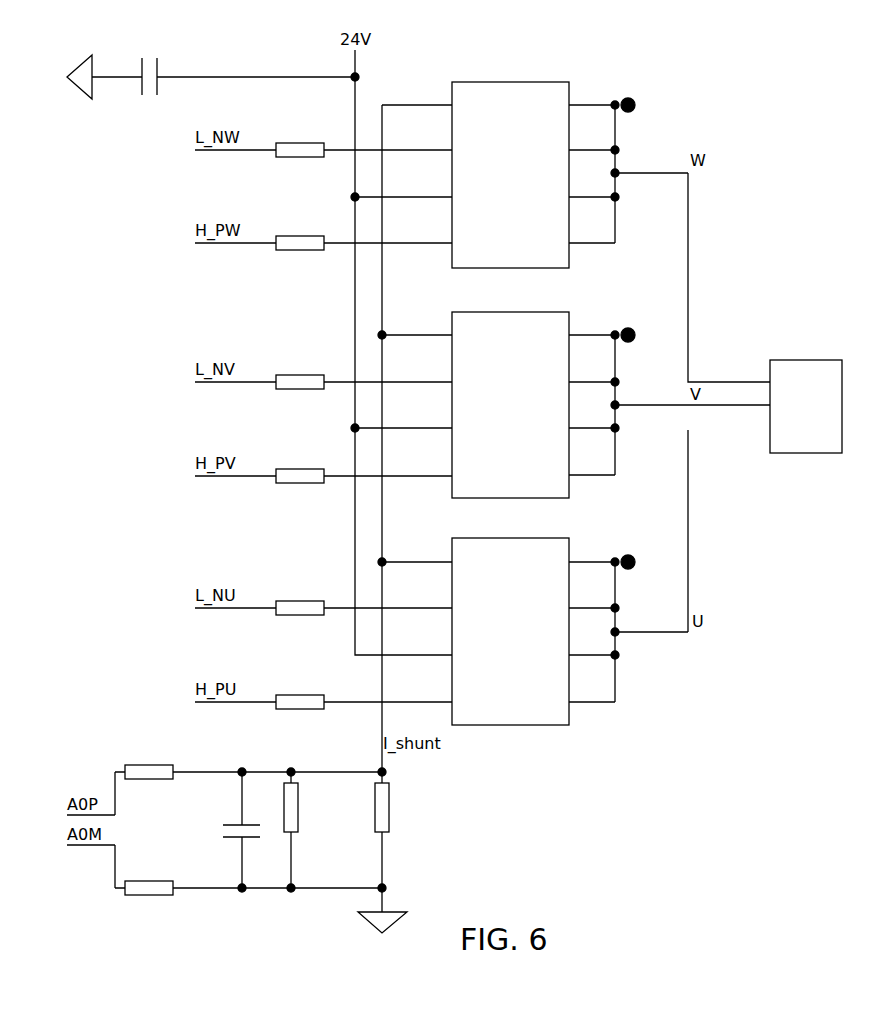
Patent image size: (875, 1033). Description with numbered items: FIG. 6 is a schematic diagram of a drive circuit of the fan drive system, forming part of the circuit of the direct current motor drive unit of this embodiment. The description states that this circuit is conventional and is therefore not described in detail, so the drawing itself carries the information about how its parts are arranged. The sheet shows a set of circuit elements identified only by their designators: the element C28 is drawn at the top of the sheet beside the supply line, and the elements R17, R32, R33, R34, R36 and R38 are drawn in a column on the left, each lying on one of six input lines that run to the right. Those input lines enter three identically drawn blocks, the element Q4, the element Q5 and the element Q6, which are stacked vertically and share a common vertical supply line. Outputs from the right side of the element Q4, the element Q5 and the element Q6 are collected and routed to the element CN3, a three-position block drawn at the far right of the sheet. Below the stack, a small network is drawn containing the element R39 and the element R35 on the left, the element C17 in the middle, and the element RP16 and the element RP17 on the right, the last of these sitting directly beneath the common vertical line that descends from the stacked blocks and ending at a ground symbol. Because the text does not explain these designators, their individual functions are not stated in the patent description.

The capacitor C28 is at (151, 64).
The resistor R17 is at (299, 139).
The resistor R32 is at (299, 232).
The resistor R33 is at (299, 371).
The resistor R34 is at (299, 465).
The resistor R36 is at (299, 597).
The resistor R38 is at (299, 691).
The resistor R39 is at (149, 761).
The resistor R35 is at (149, 877).
The capacitor C17 is at (222, 830).
The resistor RP16 is at (313, 830).
The shunt resistor RP17 is at (404, 807).
The dual MOSFET Q4 is at (558, 164).
The dual MOSFET Q5 is at (599, 394).
The dual MOSFET Q6 is at (558, 620).
The connector CN3 is at (806, 396).